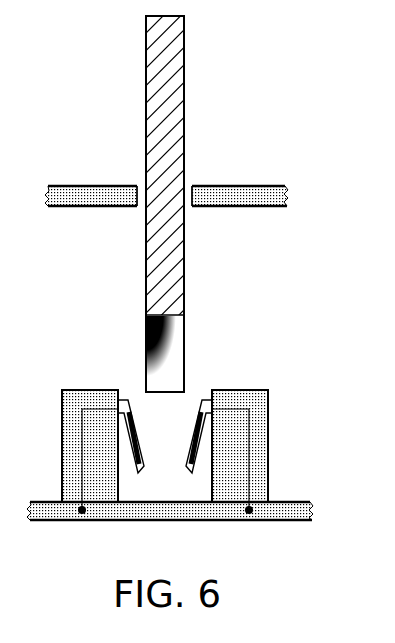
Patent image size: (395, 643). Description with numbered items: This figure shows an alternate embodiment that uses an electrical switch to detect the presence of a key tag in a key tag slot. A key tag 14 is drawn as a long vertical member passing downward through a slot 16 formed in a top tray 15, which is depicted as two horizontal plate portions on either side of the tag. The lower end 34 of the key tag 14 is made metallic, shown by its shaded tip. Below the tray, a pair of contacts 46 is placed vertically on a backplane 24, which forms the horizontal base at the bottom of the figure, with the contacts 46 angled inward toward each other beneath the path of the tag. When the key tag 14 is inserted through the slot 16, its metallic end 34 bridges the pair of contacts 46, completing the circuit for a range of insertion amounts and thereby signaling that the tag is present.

The key tag 14 is at (185, 132).
The top tray 15 is at (243, 185).
The slot 16 is at (188, 185).
The end of the key tag 34 is at (183, 352).
The pair of contacts 46 is at (189, 450).
The backplane 24 is at (277, 502).